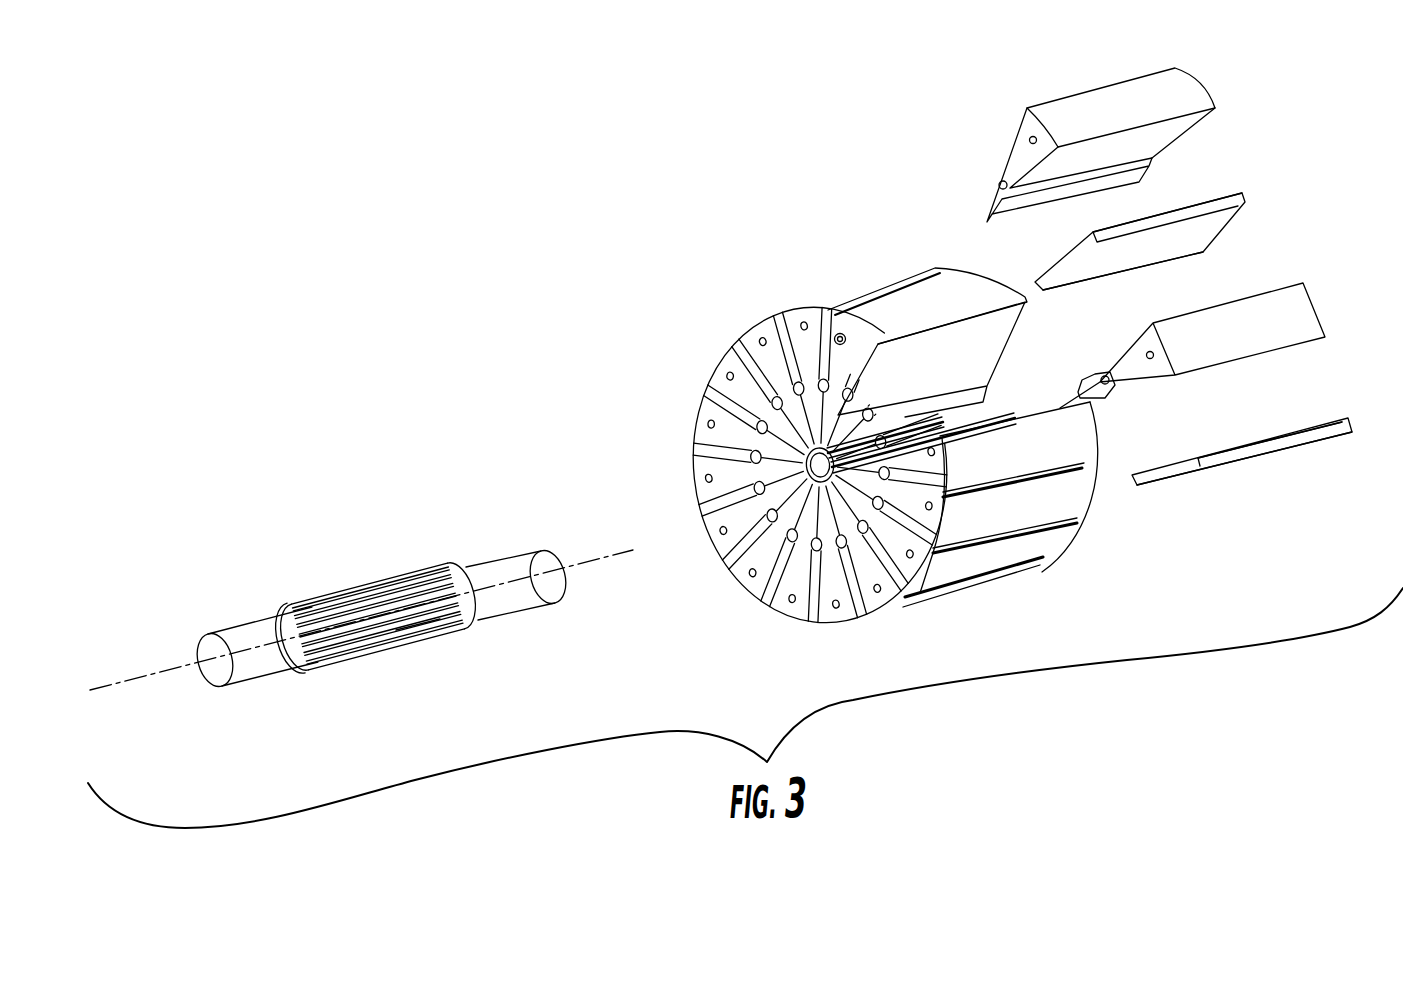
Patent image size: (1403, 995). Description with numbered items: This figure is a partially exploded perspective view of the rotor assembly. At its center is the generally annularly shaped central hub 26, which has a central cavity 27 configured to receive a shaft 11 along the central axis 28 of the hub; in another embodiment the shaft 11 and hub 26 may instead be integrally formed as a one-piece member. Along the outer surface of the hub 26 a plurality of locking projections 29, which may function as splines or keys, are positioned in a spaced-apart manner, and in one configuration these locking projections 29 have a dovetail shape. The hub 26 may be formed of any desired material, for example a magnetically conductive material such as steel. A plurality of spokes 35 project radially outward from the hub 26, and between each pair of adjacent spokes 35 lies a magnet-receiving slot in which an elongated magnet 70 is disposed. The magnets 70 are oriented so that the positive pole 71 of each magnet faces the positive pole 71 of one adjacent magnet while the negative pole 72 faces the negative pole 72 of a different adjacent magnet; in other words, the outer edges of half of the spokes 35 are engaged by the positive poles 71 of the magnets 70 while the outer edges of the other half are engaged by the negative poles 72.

The shaft 11 is at (262, 630).
The central hub 26 is at (347, 598).
The central cavity 27 is at (313, 668).
The central axis 28 is at (587, 563).
The locking projections 29 is at (416, 607).
The spokes 35 is at (803, 317).
The magnet 70 is at (720, 487).
The positive pole 71 is at (1173, 212).
The negative pole 72 is at (1172, 255).